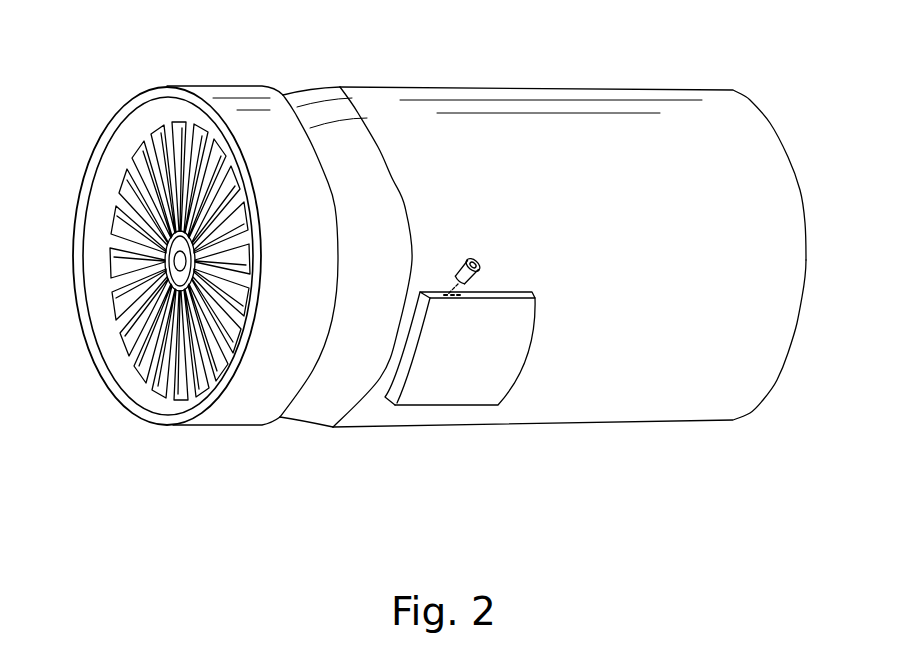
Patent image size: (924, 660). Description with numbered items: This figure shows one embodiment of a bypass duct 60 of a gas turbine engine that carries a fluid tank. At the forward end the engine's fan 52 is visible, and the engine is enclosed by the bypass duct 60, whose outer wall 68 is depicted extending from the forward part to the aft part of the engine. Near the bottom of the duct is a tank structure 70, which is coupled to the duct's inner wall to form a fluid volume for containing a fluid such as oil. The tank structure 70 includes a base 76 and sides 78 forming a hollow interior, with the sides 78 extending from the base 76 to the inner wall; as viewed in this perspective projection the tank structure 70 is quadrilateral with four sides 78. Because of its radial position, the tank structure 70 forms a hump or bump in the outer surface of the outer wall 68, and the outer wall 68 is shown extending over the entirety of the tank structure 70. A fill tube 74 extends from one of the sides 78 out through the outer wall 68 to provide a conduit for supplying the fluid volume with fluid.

The fan 52 is at (77, 161).
The bypass duct 60 is at (750, 133).
The outer wall 68 is at (736, 382).
The tank structure 70 is at (515, 344).
The fill tube 74 is at (460, 259).
The base 76 is at (483, 373).
The sides 78 is at (513, 292).